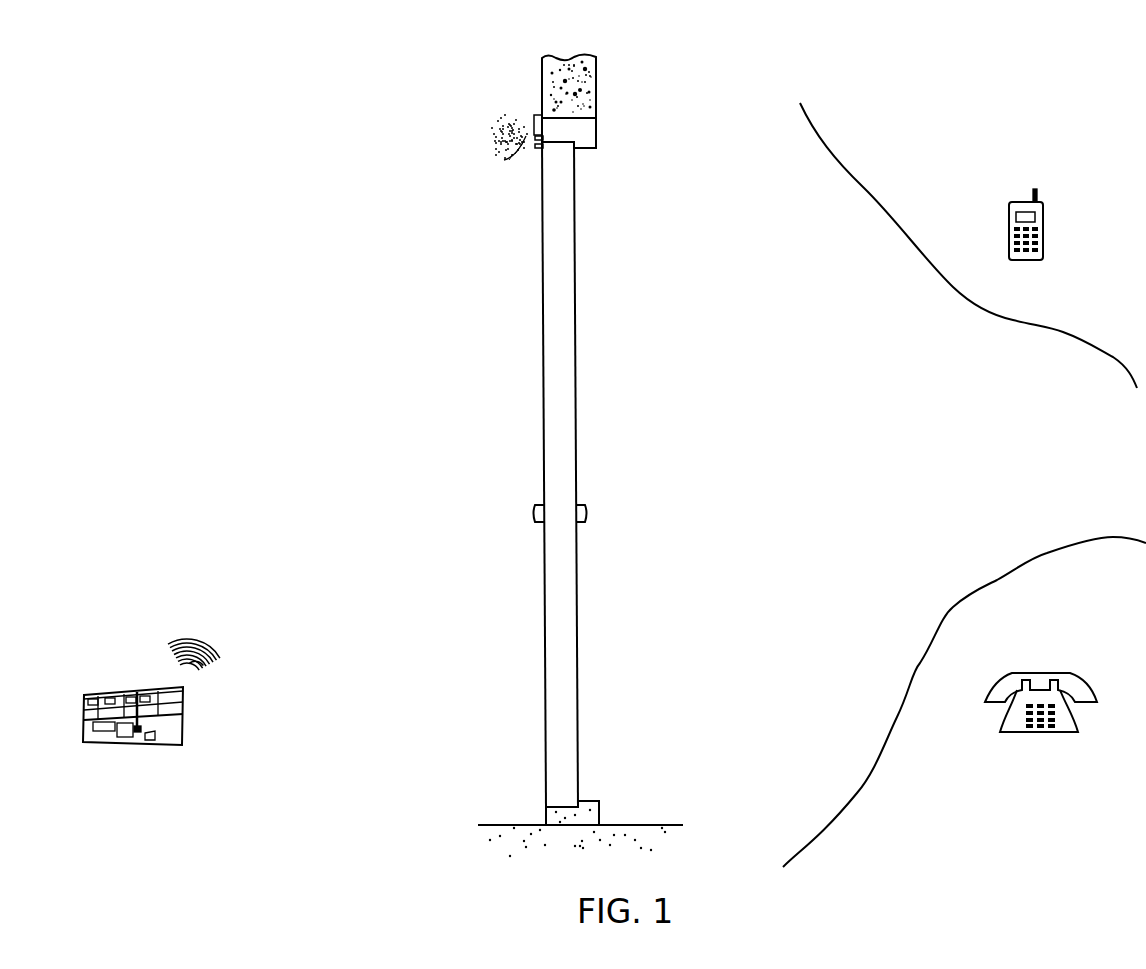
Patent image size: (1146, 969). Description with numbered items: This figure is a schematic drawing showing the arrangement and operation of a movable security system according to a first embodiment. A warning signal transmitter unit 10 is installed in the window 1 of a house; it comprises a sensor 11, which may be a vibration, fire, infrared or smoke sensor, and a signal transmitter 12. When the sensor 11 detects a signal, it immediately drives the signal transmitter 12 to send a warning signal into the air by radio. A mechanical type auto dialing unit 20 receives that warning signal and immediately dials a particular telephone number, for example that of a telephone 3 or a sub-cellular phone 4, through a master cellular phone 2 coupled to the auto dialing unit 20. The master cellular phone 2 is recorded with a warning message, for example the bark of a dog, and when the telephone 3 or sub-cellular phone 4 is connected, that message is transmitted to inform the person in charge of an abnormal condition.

The window 1 is at (568, 305).
The master cellular phone 2 is at (201, 647).
The telephone 3 is at (1083, 657).
The sub-cellular phone 4 is at (1050, 232).
The warning signal transmitter unit 10 is at (500, 126).
The sensor 11 is at (504, 160).
The signal transmitter 12 is at (533, 118).
The mechanical type auto dialing unit 20 is at (200, 718).